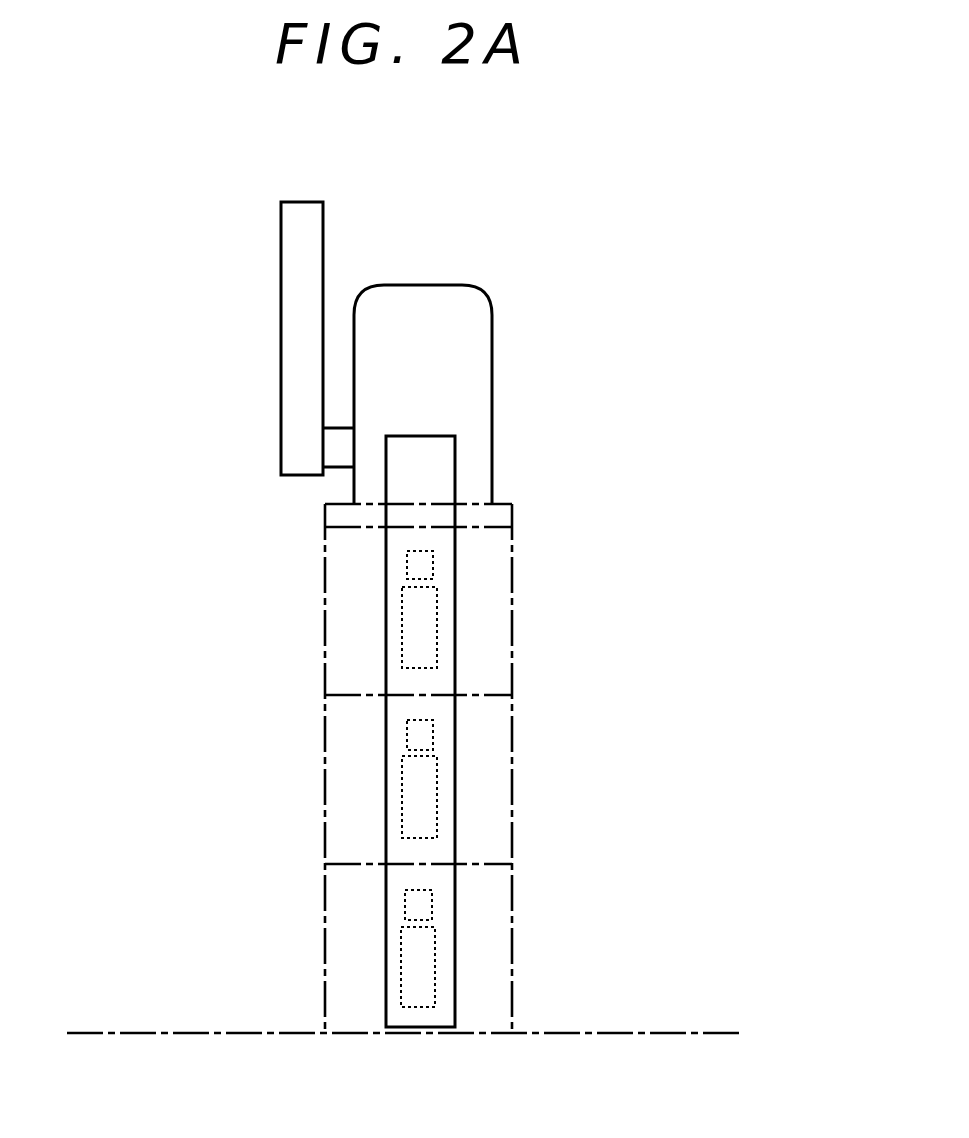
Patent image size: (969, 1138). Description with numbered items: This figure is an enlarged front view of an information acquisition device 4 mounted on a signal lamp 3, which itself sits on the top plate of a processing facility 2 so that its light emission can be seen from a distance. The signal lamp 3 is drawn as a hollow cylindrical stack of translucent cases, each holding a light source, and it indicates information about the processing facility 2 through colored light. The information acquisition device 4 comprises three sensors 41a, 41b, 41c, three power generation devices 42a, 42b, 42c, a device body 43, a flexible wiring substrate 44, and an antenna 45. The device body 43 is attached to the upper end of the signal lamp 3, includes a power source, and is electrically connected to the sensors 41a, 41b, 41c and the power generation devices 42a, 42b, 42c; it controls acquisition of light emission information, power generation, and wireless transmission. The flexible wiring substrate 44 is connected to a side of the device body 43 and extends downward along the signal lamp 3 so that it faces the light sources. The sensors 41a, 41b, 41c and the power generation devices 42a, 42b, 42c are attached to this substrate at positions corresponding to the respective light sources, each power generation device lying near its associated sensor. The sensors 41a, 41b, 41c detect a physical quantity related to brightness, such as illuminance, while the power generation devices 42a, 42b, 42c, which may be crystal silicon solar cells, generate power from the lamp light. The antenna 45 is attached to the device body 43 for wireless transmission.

The processing facility 2 is at (193, 1030).
The signal lamp 3 is at (337, 755).
The information acquisition device 4 is at (404, 575).
The sensor 41a is at (425, 627).
The sensor 41b is at (425, 795).
The sensor 41c is at (430, 972).
The power generation device 42a is at (427, 562).
The power generation device 42b is at (427, 730).
The power generation device 42c is at (428, 905).
The device body 43 is at (450, 285).
The flexible wiring substrate 44 is at (460, 455).
The antenna 45 is at (281, 280).